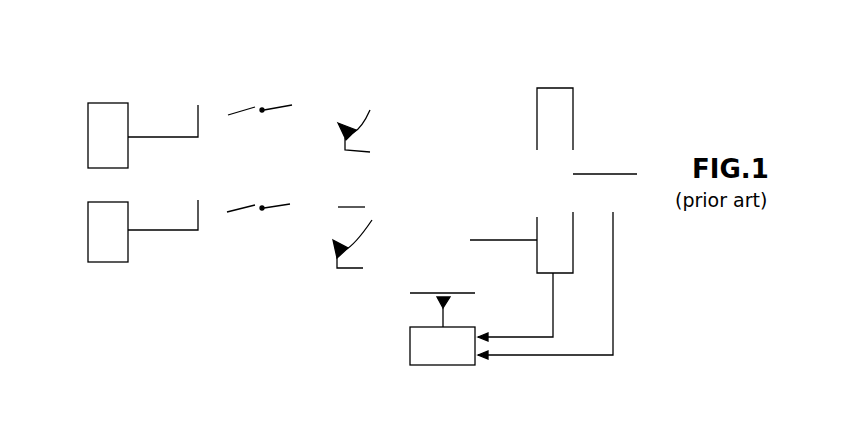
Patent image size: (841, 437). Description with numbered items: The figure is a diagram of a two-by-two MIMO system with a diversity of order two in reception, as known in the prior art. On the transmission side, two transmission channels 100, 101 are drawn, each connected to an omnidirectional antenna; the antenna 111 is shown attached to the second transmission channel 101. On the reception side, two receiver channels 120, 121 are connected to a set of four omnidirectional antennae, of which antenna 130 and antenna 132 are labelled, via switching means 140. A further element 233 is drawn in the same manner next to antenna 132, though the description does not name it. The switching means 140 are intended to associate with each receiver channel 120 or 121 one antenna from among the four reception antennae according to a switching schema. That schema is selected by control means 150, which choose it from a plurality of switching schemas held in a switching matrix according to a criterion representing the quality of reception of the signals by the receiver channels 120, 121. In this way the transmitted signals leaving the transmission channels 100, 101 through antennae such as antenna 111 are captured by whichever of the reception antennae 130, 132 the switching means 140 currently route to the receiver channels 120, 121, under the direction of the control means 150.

The transmission channel 100 is at (87, 123).
The transmission channel 101 is at (87, 220).
The omnidirectional antenna 111 is at (205, 182).
The omnidirectional antenna 130 is at (315, 125).
The omnidirectional antenna 132 is at (363, 173).
The second switch 233 is at (367, 237).
The switching means 140 is at (541, 189).
The receiver channel 120 is at (575, 102).
The receiver channel 121 is at (605, 185).
The control means 150 is at (450, 365).